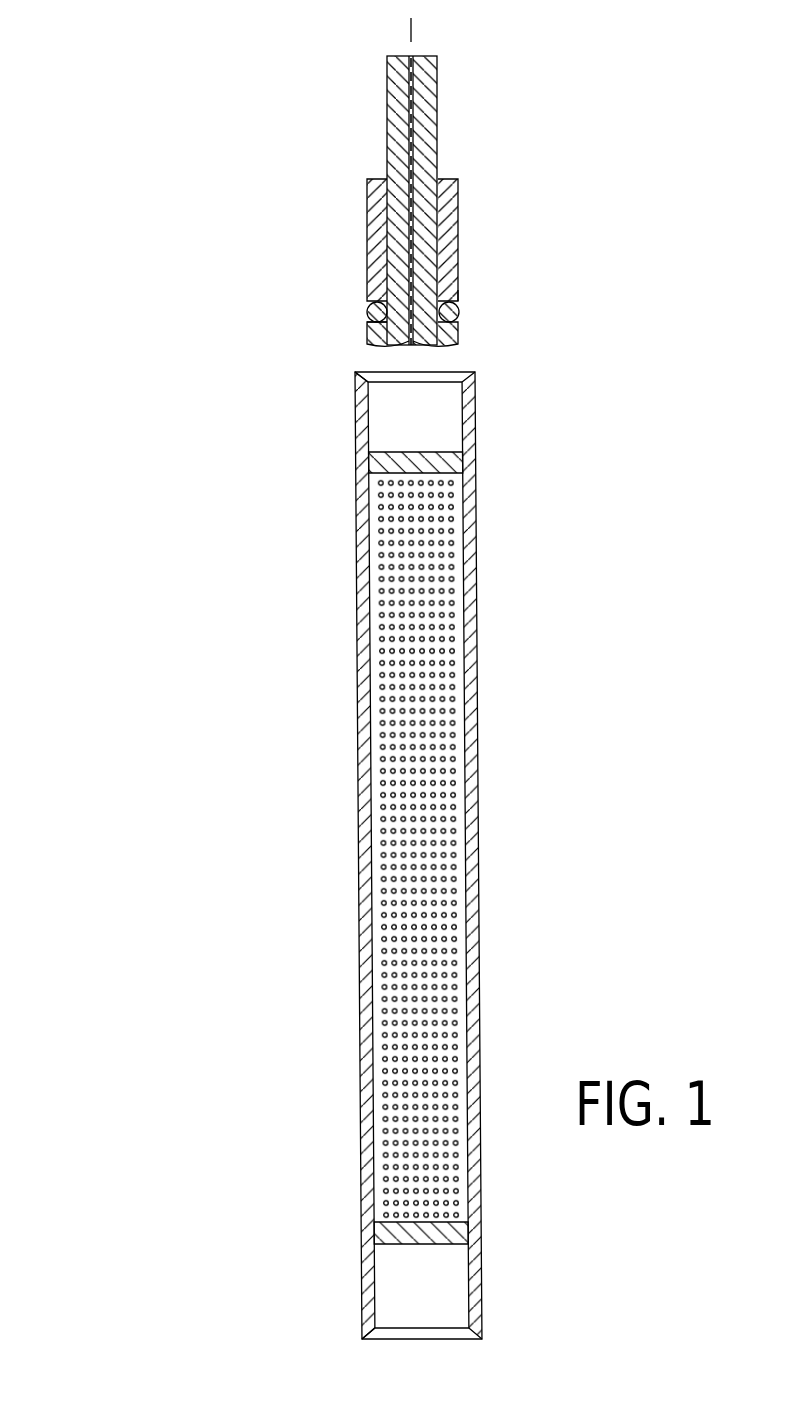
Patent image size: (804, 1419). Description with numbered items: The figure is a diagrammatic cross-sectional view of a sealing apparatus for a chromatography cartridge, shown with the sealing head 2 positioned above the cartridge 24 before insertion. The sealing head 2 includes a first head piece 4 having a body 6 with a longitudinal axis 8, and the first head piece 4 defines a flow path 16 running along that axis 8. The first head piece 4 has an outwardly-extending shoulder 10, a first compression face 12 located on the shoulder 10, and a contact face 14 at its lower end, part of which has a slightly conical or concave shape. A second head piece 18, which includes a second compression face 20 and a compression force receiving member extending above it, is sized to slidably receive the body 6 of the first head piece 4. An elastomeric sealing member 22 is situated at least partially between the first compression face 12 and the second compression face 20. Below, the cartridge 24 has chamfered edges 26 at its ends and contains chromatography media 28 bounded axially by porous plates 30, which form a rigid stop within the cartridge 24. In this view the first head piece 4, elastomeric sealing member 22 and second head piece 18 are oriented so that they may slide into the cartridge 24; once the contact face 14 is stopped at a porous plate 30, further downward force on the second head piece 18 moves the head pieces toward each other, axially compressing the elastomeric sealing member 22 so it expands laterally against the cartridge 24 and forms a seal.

The sealing head 2 is at (330, 122).
The first head piece 4 is at (437, 105).
The body 6 is at (393, 95).
The longitudinal axis 8 is at (400, 26).
The outwardly-extending shoulder 10 is at (373, 331).
The first compression face 12 is at (476, 373).
The contact face 14 is at (367, 342).
The flow path 16 is at (413, 56).
The second head piece 18 is at (452, 220).
The second compression face 20 is at (460, 290).
The elastomeric sealing member 22 is at (456, 313).
The cartridge 24 is at (478, 640).
The chamfered edges 26 is at (355, 370).
The chromatography media 28 is at (453, 750).
The porous plates 30 is at (448, 452).